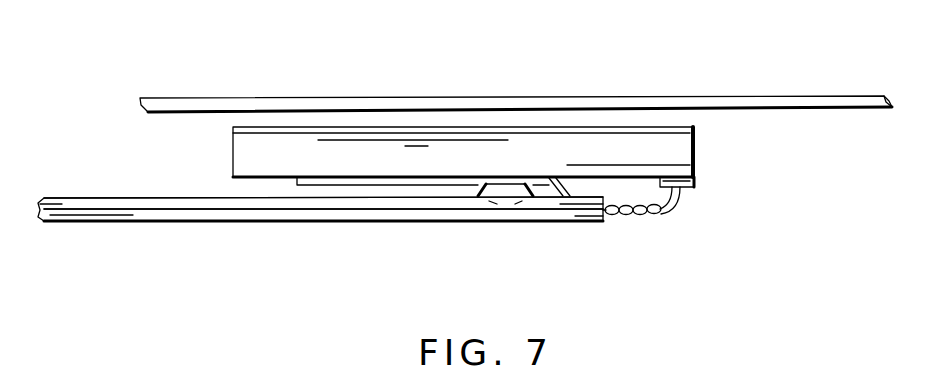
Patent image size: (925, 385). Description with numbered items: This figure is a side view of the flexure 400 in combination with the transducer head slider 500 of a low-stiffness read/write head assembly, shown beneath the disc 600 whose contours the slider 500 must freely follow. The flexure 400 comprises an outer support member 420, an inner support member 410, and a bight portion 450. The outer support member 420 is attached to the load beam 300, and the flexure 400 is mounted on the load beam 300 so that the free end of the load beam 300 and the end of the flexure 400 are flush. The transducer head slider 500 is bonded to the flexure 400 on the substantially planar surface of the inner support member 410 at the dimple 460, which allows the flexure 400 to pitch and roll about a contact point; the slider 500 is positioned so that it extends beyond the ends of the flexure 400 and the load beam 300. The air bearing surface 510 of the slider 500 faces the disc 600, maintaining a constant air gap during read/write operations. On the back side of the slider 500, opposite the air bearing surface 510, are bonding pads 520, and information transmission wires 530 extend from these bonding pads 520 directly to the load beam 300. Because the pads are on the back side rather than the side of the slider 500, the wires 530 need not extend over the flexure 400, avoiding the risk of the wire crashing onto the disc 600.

The load beam 300 is at (283, 212).
The flexure 400 is at (86, 191).
The inner support member 410 is at (392, 183).
The outer support member 420 is at (178, 203).
The bight portion 450 is at (556, 190).
The dimple 460 is at (479, 187).
The transducer head slider 500 is at (231, 150).
The air bearing surface 510 is at (377, 127).
The bonding pads 520 is at (695, 179).
The information transmission wires 530 is at (652, 214).
The disc 600 is at (710, 76).